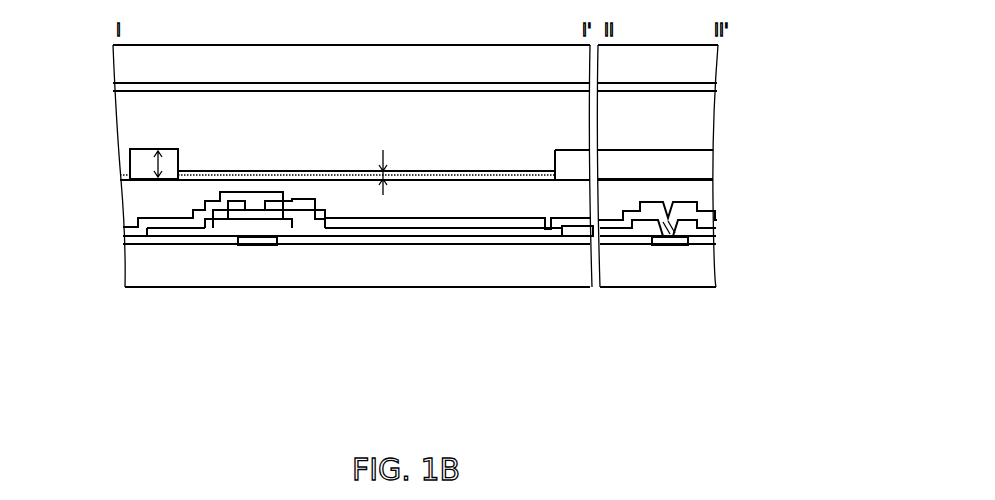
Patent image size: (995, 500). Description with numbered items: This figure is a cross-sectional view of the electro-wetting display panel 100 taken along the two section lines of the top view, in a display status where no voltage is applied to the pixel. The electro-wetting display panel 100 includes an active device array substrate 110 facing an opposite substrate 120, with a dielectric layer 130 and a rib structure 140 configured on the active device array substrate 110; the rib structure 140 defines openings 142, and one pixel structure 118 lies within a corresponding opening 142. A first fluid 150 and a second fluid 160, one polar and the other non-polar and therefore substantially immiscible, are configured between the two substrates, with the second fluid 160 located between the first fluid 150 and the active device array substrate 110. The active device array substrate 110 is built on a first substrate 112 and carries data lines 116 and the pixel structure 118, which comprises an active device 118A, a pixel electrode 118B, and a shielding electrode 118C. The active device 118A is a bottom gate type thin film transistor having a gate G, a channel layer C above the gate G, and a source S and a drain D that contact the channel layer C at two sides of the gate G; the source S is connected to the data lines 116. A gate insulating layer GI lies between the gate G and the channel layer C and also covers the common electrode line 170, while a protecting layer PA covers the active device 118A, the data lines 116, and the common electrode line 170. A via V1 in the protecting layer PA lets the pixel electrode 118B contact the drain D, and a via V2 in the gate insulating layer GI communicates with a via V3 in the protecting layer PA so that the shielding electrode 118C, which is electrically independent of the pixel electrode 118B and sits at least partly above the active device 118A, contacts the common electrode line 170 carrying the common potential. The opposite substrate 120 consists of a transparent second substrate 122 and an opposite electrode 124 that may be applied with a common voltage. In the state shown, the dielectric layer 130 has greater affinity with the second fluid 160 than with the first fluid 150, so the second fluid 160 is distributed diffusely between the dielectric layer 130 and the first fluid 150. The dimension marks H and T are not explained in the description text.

The electro-wetting display panel 100 is at (690, 395).
The active device array substrate 110 is at (106, 215).
The first substrate 112 is at (143, 272).
The data lines 116 is at (183, 231).
The pixel structure 118 is at (456, 298).
The active device 118A is at (265, 283).
The pixel electrode 118B is at (342, 228).
The shielding electrode 118C is at (218, 223).
The opposite substrate 120 is at (106, 46).
The second substrate 122 is at (176, 57).
The opposite electrode 124 is at (222, 88).
The dielectric layer 130 is at (130, 198).
The rib structure 140 is at (130, 152).
The openings 142 is at (186, 161).
The first fluid 150 is at (128, 100).
The second fluid 160 is at (185, 183).
The common electrode line 170 is at (668, 241).
The height H is at (152, 163).
The thickness T is at (383, 150).
The via V1 is at (357, 200).
The via V2 is at (670, 232).
The via V3 is at (668, 210).
The source S is at (240, 207).
The gate G is at (253, 240).
The channel layer C is at (263, 214).
The drain D is at (304, 214).
The gate insulating layer GI is at (410, 241).
The protecting layer PA is at (466, 231).